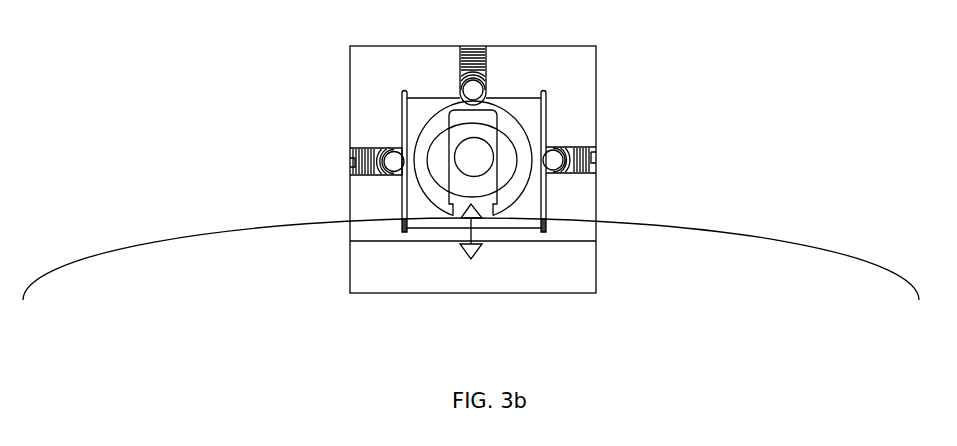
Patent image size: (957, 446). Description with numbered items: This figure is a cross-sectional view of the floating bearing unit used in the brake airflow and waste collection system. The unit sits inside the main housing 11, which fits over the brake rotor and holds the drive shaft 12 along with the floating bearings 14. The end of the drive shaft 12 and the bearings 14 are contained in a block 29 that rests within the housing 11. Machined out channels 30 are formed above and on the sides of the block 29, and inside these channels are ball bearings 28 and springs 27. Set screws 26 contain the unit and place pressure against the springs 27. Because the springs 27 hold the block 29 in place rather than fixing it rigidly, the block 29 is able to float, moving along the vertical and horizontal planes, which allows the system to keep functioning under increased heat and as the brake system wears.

The main housing 11 is at (361, 73).
The drive shaft 12 is at (474, 157).
The floating bearings 14 is at (442, 144).
The set screws 26 is at (593, 163).
The springs 27 is at (590, 170).
The ball bearings 28 is at (553, 170).
The block 29 is at (530, 110).
The machined out channels 30 is at (596, 149).